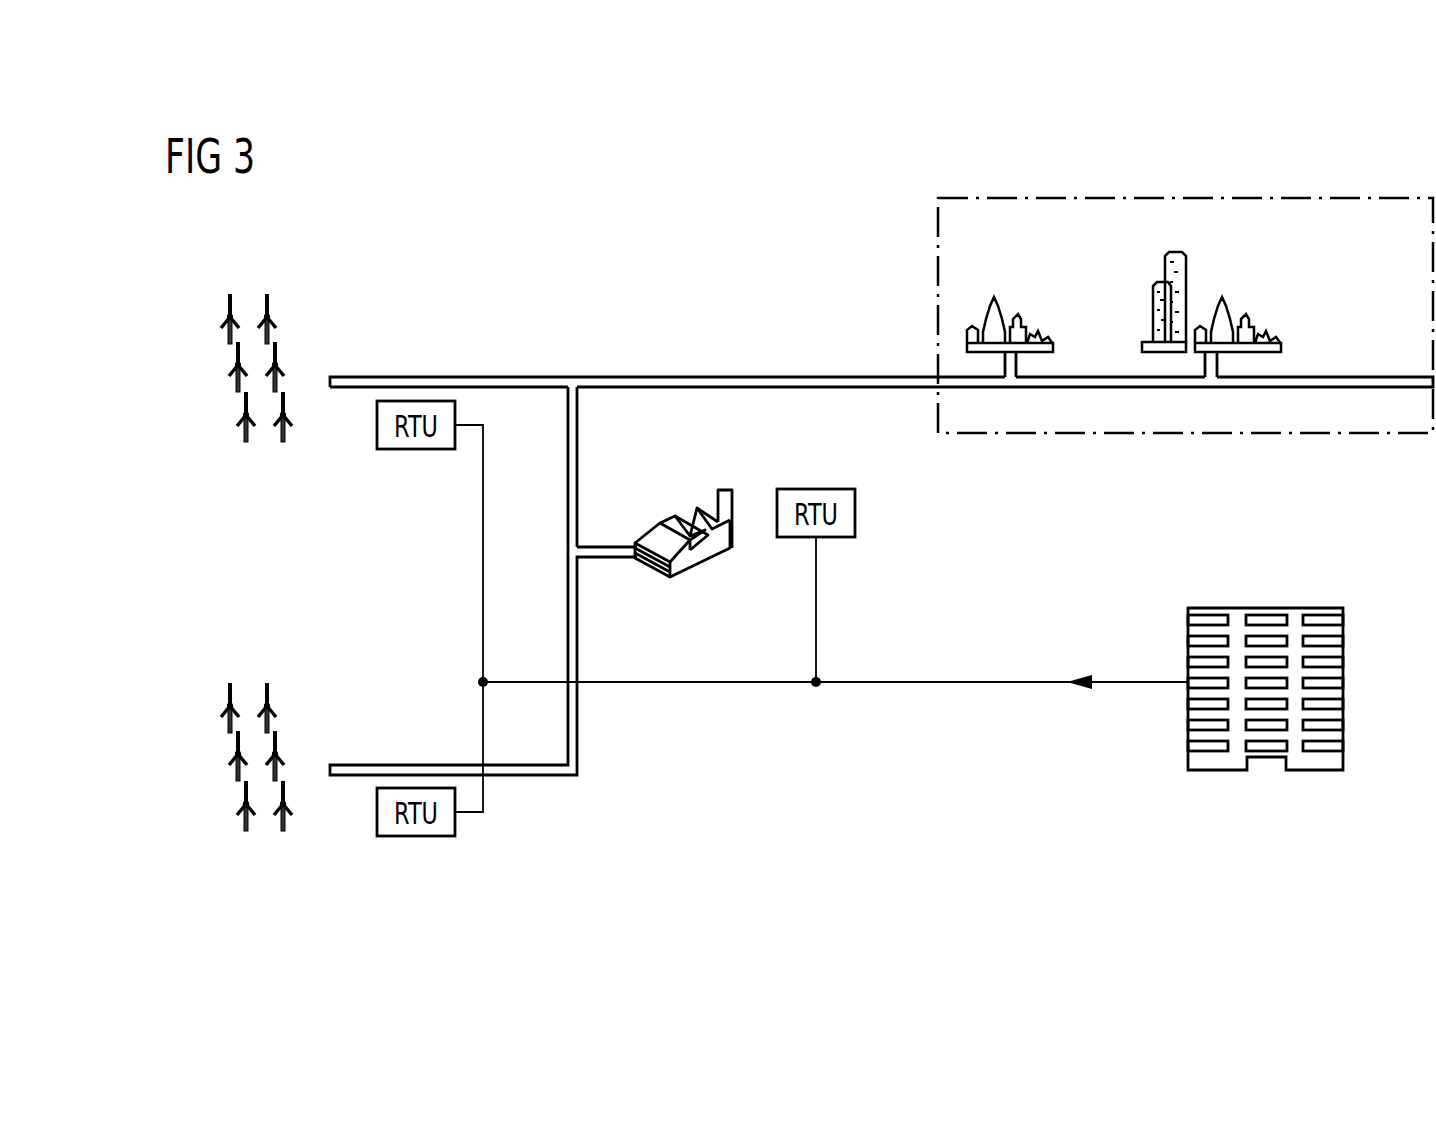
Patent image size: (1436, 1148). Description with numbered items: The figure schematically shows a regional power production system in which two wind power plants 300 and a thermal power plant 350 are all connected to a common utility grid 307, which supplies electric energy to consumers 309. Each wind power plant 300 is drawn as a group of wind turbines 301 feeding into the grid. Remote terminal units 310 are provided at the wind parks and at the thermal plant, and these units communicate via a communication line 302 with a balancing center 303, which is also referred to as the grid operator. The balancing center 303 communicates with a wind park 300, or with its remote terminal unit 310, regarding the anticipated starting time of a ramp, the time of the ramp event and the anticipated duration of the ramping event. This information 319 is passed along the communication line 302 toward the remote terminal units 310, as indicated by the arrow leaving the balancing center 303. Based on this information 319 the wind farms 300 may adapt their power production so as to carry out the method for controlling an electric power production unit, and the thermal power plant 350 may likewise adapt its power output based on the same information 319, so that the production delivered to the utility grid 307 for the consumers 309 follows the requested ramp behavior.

The wind power plant 300 is at (287, 529).
The wind turbine 301 is at (228, 330).
The communication line 302 is at (940, 690).
The balancing center 303 is at (1265, 606).
The utility grid 307 is at (1185, 282).
The consumer 309 is at (1018, 313).
The remote terminal unit 310 is at (415, 450).
The information 319 is at (1078, 673).
The thermal power plant 350 is at (700, 576).